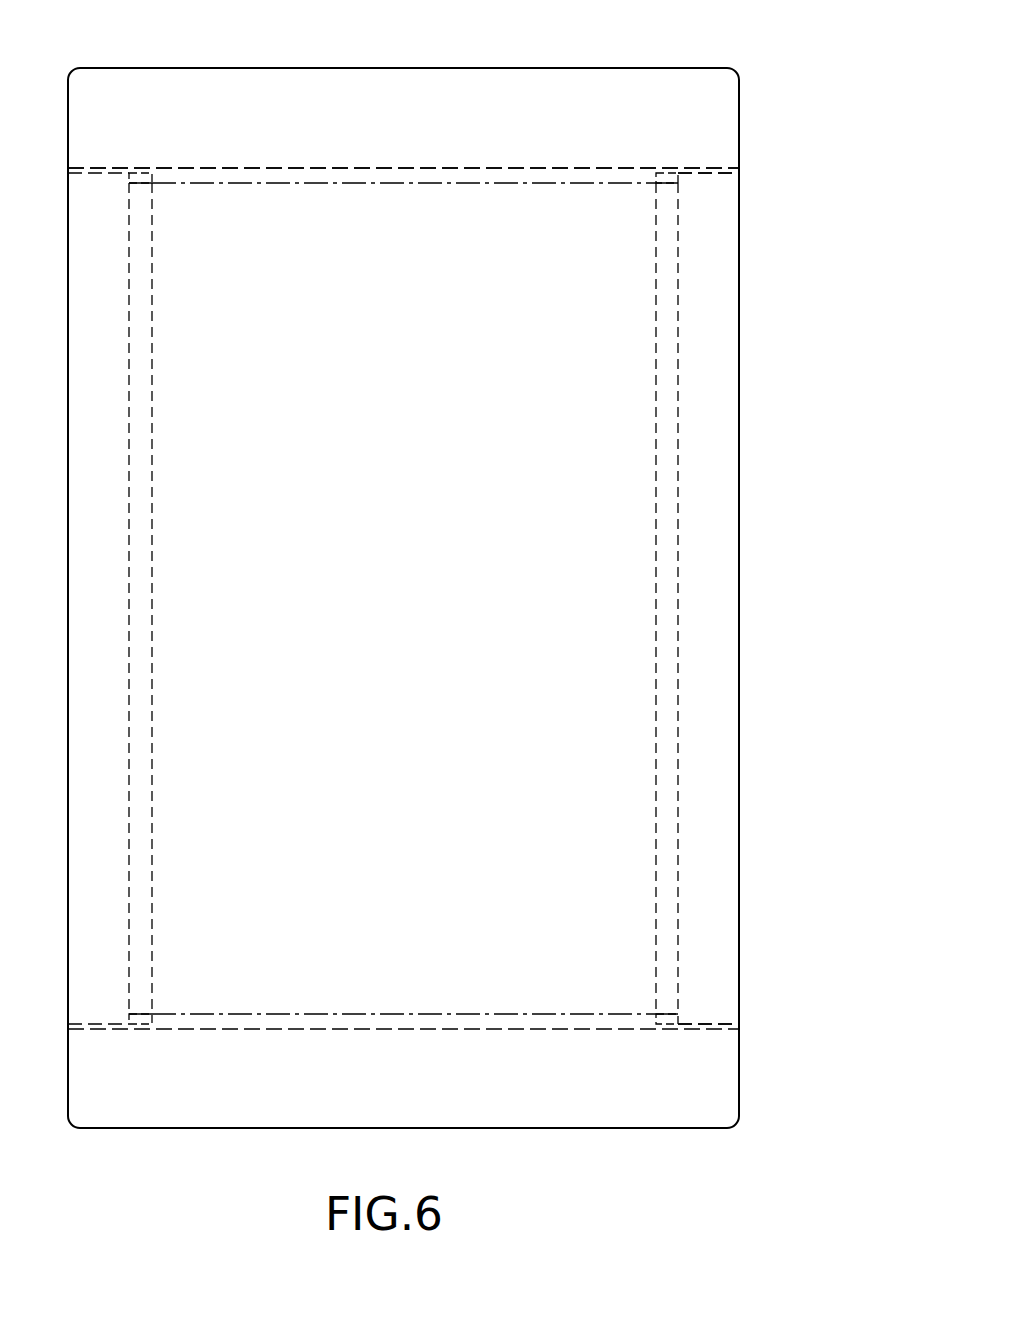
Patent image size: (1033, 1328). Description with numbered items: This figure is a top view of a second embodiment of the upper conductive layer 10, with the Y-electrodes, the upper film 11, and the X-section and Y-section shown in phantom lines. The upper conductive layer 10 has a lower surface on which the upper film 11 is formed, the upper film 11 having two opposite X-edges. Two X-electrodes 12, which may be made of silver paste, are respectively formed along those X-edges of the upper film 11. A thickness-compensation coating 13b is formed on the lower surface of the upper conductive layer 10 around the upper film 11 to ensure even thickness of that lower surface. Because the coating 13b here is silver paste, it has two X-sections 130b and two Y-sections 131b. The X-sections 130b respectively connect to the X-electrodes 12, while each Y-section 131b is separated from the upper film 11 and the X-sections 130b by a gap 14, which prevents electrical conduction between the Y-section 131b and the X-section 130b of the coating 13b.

The upper conductive layer 10 is at (760, 495).
The upper film 11 is at (608, 745).
The X-electrodes 12 is at (665, 433).
The thickness-compensation coating 13b is at (497, 95).
The X-section 130b is at (712, 767).
The Y-section 131b is at (366, 100).
The gap 14 is at (589, 175).